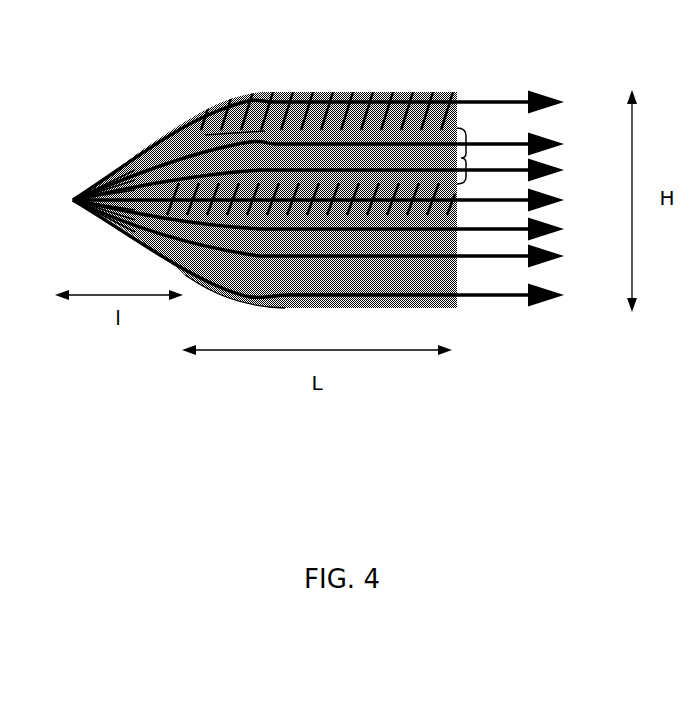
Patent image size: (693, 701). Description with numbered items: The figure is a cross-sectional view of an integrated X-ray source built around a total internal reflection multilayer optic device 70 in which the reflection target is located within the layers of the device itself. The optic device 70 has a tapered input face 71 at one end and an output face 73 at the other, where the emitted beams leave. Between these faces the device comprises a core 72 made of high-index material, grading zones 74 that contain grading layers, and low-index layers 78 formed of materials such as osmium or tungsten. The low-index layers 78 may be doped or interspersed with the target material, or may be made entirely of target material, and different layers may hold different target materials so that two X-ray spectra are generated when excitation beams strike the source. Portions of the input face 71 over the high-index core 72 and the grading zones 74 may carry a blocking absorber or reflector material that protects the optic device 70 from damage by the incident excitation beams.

The multilayer optic device 70 is at (317, 84).
The input face 71 is at (105, 175).
The core 72 is at (347, 190).
The output face 73 is at (455, 275).
The grading zones 74 is at (462, 158).
The low-index layers 78 is at (343, 95).